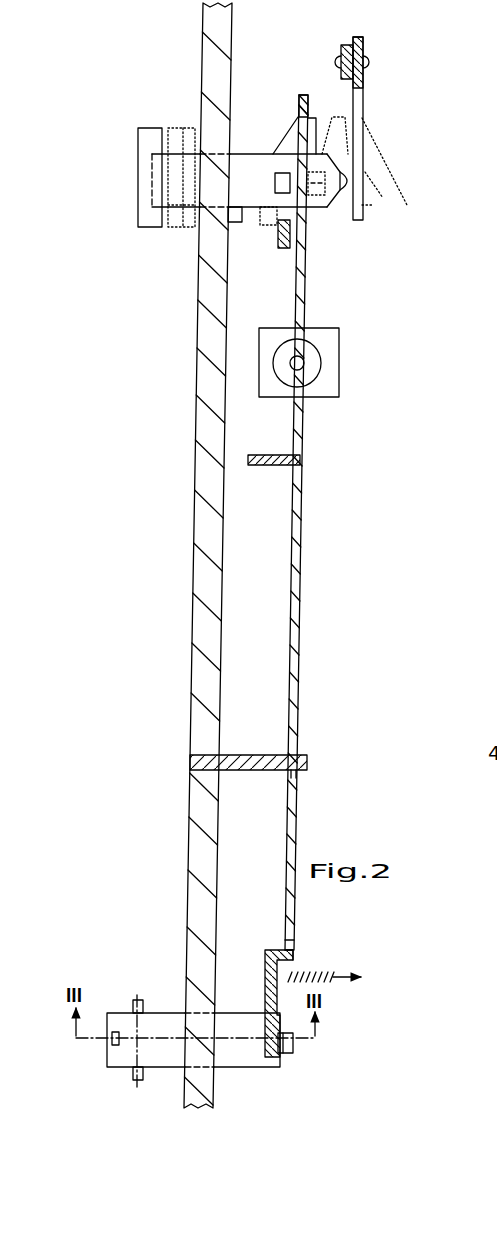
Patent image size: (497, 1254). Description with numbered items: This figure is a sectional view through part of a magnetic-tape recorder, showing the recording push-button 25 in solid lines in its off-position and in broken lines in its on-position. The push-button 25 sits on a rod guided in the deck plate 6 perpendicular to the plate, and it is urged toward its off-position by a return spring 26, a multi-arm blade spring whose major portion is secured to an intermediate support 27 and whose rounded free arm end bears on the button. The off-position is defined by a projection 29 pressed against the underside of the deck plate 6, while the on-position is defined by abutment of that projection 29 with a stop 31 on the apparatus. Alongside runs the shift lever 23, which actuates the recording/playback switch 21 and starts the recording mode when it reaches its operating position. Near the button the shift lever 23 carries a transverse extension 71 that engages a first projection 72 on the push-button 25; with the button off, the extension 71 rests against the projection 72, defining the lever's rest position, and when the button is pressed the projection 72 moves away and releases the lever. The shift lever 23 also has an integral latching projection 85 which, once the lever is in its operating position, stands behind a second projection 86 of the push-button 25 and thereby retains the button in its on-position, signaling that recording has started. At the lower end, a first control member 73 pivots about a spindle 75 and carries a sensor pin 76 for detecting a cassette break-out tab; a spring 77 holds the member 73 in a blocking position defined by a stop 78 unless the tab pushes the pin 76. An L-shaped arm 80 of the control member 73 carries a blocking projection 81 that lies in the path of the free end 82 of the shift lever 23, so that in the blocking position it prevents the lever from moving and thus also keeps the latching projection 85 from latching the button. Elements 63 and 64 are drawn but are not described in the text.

The deck plate 6 is at (200, 565).
The recording/playback switch 21 is at (342, 357).
The shift lever 23 is at (303, 577).
The push-button 25 is at (150, 127).
The return spring 26 is at (366, 108).
The intermediate support 27 is at (340, 58).
The projection 29 is at (236, 223).
The stop 31 is at (281, 233).
The guide 63 is at (295, 743).
The collar 64 is at (245, 756).
The extension 71 is at (306, 113).
The first projection 72 is at (290, 137).
The first control member 73 is at (163, 1023).
The spindle 75 is at (140, 1090).
The sensor pin 76 is at (115, 1031).
The spring 77 is at (335, 975).
The stop 78 is at (292, 1052).
The L-shaped arm 80 is at (267, 1004).
The blocking projection 81 is at (296, 957).
The free end 82 is at (286, 946).
The latching projection 85 is at (309, 206).
The second projection 86 is at (274, 181).